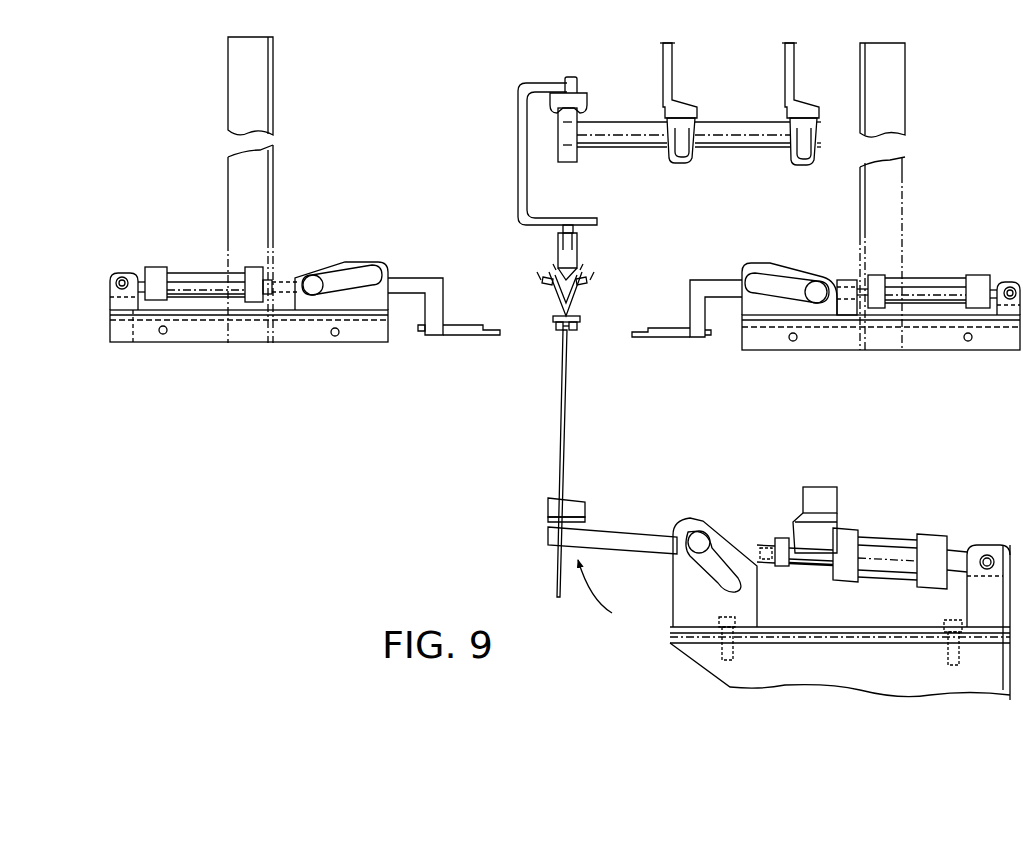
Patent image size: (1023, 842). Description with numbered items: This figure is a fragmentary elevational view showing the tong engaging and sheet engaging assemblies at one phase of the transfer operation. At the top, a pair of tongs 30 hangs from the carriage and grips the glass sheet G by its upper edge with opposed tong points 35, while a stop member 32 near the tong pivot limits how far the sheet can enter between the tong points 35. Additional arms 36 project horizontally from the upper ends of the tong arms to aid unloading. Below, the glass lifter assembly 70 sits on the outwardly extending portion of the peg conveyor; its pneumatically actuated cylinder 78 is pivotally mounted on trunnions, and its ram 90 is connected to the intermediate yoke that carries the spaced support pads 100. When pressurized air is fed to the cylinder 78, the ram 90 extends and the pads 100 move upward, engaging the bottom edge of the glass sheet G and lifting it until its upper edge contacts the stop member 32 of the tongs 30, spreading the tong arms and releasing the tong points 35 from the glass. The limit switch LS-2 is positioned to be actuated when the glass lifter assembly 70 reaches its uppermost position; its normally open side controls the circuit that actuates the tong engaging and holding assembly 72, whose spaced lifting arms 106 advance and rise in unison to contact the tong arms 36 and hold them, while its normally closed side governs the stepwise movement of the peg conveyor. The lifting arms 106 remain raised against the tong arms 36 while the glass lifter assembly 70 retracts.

The tongs 30 is at (615, 283).
The stop member 32 is at (582, 322).
The tong points 35 is at (557, 332).
The additional arms 36 is at (588, 281).
The glass lifter assembly 70 is at (703, 668).
The tong engaging and holding assembly 72 is at (372, 387).
The actuating cylinder 78 is at (880, 534).
The ram 90 is at (803, 565).
The support pads 100 is at (582, 511).
The lifting arms 106 is at (692, 338).
The glass sheet G is at (563, 355).
The limit switch LS-2 is at (803, 492).